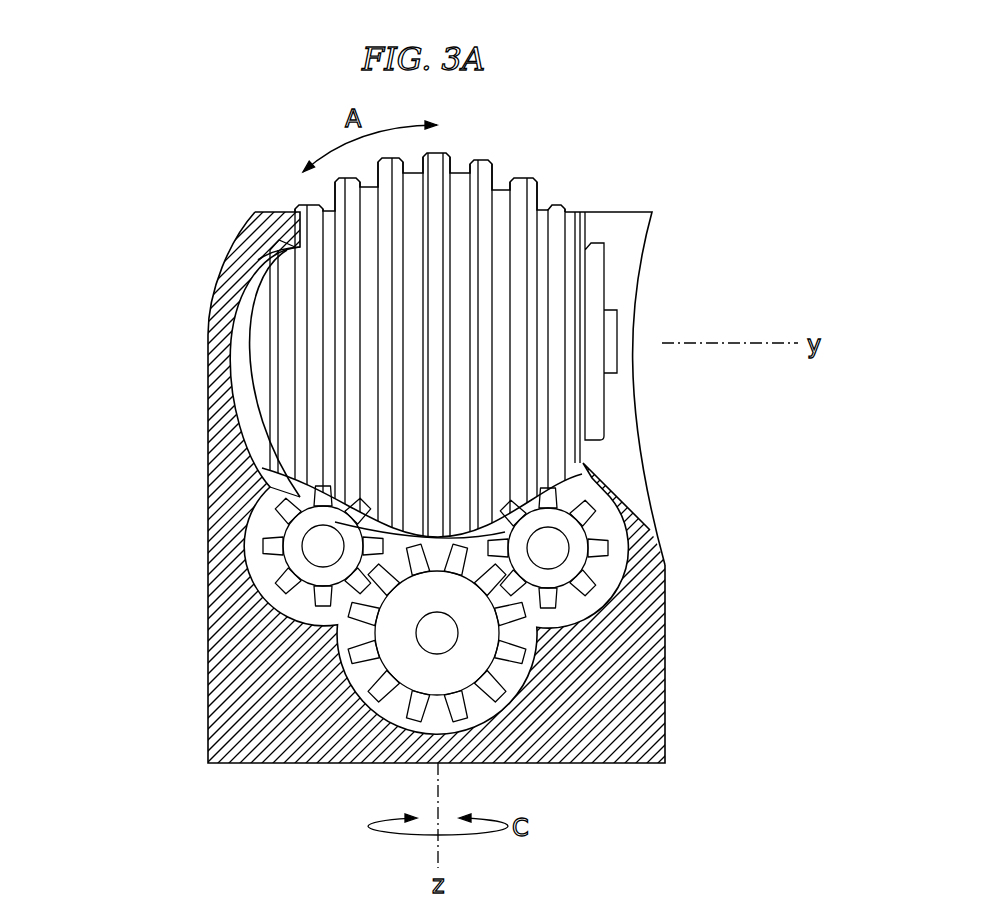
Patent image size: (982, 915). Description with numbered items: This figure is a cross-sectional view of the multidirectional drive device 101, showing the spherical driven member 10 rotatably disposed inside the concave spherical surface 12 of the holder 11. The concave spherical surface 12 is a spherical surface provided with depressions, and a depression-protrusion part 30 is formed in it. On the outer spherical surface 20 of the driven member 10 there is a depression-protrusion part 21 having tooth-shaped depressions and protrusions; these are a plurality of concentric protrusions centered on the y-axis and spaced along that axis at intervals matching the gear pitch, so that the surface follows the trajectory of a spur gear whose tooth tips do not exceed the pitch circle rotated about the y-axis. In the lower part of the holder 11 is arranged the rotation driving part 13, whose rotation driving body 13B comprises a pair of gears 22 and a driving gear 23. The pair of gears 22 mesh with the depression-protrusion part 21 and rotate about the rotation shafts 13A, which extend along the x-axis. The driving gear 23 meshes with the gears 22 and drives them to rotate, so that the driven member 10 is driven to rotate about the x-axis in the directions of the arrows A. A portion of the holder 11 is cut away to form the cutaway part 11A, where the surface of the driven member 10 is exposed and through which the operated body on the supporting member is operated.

The rotary operation device 101 is at (203, 240).
The driven member 10 is at (545, 178).
The holder 11 is at (665, 678).
The cutaway part 11A is at (628, 400).
The concave spherical surface 12 is at (253, 296).
The rotation driving part 13 is at (340, 647).
The rotation shafts 13A is at (310, 535).
The rotation driving body 13B is at (131, 545).
The spherical surface 20 is at (558, 208).
The depression-protrusion part 21 is at (572, 313).
The gears 22 is at (268, 548).
The driving gear 23 is at (360, 617).
The depression-protrusion part 30 is at (285, 222).